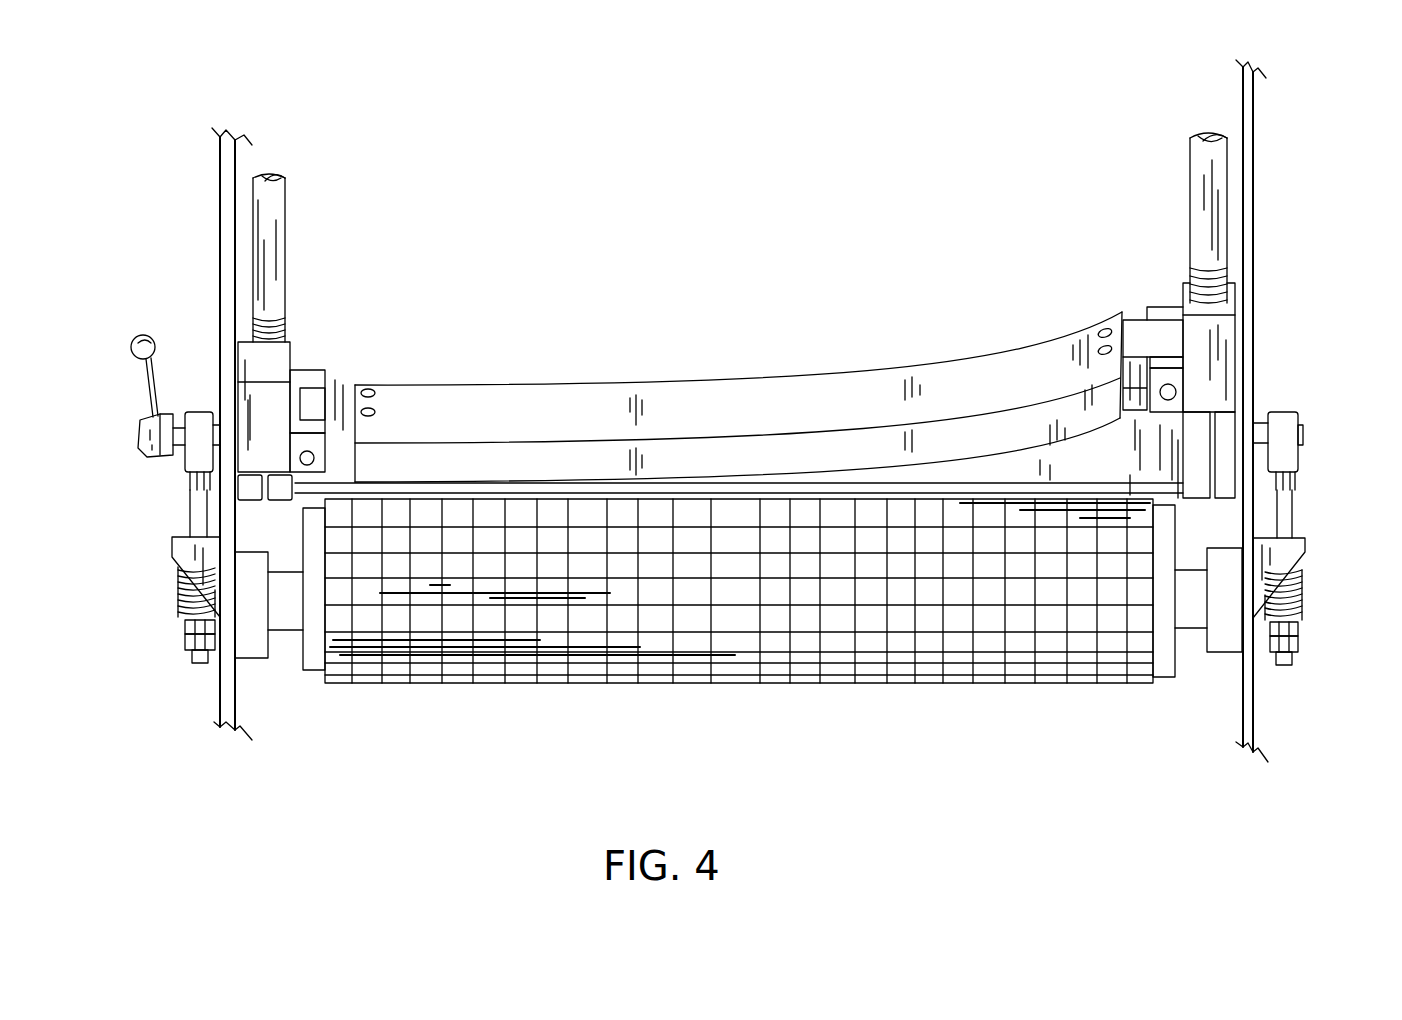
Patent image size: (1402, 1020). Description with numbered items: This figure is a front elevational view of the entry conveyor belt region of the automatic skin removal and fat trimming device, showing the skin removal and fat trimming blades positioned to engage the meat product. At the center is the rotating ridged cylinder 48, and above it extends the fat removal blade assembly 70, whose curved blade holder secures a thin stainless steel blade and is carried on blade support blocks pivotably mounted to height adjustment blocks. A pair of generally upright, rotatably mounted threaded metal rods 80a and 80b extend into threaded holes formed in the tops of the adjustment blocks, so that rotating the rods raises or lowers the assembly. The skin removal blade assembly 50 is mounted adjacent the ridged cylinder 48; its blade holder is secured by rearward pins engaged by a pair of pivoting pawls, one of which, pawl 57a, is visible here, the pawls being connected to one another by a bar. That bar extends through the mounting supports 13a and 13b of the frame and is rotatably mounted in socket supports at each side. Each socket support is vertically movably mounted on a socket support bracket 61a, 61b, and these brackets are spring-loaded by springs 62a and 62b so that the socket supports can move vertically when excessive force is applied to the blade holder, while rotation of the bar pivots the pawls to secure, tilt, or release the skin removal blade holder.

The mounting support 13a is at (225, 212).
The mounting support 13b is at (1253, 163).
The threaded metal rod 80a is at (268, 257).
The threaded metal rod 80b is at (1203, 212).
The fat removal blade assembly 70 is at (826, 410).
The skin removal blade assembly 50 is at (1155, 453).
The rotating ridged cylinder 48 is at (902, 588).
The pivoting pawl 57a is at (252, 490).
The socket support bracket 61a is at (192, 549).
The socket support bracket 61b is at (1283, 550).
The spring 62a is at (178, 597).
The spring 62b is at (1298, 602).